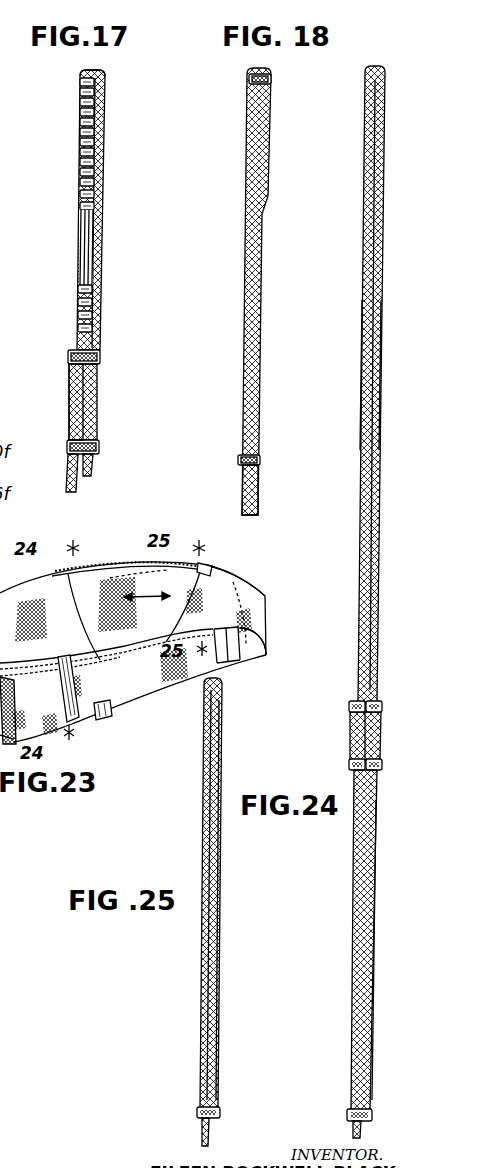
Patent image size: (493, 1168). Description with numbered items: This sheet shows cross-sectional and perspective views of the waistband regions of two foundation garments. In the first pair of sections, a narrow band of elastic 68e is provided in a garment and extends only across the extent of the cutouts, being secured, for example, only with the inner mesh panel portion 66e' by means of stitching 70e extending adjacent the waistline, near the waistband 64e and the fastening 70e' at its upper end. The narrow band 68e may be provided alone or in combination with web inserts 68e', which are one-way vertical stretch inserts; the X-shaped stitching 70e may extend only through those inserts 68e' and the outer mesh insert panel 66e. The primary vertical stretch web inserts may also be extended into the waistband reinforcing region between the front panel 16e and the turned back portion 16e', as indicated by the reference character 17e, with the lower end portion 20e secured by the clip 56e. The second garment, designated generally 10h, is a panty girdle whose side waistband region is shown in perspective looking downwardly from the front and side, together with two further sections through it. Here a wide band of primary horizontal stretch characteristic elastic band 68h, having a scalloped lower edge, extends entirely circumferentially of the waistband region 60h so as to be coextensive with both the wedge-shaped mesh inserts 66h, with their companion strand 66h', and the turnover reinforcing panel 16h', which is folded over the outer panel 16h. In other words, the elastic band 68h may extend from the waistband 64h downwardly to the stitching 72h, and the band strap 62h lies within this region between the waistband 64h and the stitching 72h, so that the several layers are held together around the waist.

In FIG. 17, the strap 64e is at (97, 72).
In FIG. 18, the strap 64e is at (249, 70).
In FIG. 17, the stitching 70e is at (57, 144).
In FIG. 18, the fastener clip 70e' is at (288, 89).
In FIG. 17, the band of elastic 68e is at (115, 210).
In FIG. 17, the web inserts 68e' is at (48, 254).
In FIG. 17, the outer mesh insert panel 66e is at (54, 247).
In FIG. 17, the inner mesh panel portion 66e' is at (123, 213).
In FIG. 17, the front panel 16e is at (49, 428).
In FIG. 17, the turned back portion 16e' is at (123, 420).
In FIG. 17, the waistband reinforcing region 17e is at (97, 405).
In FIG. 18, the strap end portion 20e is at (249, 495).
In FIG. 18, the clip 56e is at (252, 497).
In FIG. 23, the foundation garment 10h is at (262, 592).
In FIG. 23, the waistband region 60h is at (298, 646).
In FIG. 23, the band strap 62h is at (43, 663).
In FIG. 24, the band strap 62h is at (355, 700).
In FIG. 23, the waistband 64h is at (58, 574).
In FIG. 24, the waistband 64h is at (371, 70).
In FIG. 24, the wedge-shaped mesh inserts 66h is at (402, 375).
In FIG. 24, the strap strand 66h' is at (329, 375).
In FIG. 23, the elastic band 68h is at (190, 599).
In FIG. 24, the elastic band 68h is at (378, 330).
In FIG. 25, the elastic band 68h is at (220, 889).
In FIG. 23, the strap 16h is at (54, 688).
In FIG. 24, the strap 16h is at (338, 940).
In FIG. 25, the strap 16h is at (176, 916).
In FIG. 24, the turnover reinforcing panel 16h' is at (399, 950).
In FIG. 25, the turnover reinforcing panel 16h' is at (243, 900).
In FIG. 23, the stitching 72h is at (100, 718).
In FIG. 24, the stitching 72h is at (370, 1116).
In FIG. 25, the stitching 72h is at (222, 1112).